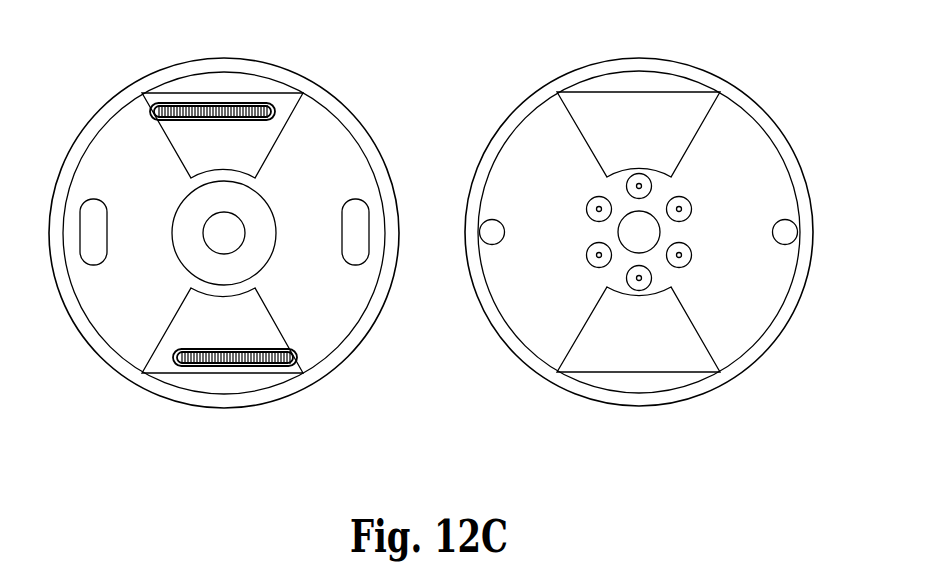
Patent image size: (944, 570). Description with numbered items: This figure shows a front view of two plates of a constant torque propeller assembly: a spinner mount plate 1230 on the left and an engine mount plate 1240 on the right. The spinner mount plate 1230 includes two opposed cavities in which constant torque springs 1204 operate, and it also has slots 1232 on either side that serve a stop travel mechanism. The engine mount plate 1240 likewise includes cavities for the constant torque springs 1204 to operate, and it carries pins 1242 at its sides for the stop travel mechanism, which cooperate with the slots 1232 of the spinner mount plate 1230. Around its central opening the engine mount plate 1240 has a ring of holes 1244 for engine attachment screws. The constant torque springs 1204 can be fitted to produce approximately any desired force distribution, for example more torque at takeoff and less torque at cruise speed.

The constant torque springs 1204 is at (190, 104).
The spinner mount plate 1230 is at (337, 100).
The slots for a stop travel mechanism 1232 is at (85, 264).
The engine mount plate 1240 is at (748, 95).
The pins 1242 is at (797, 240).
The holes 1244 is at (588, 259).